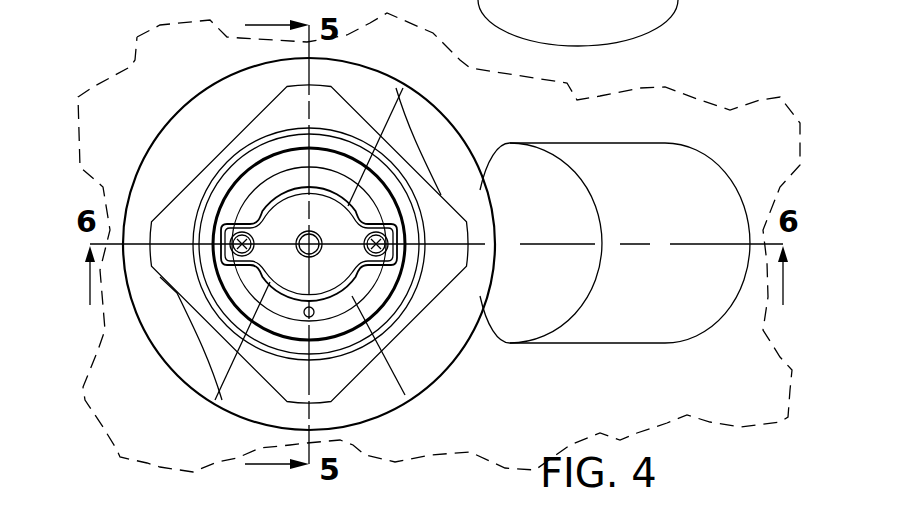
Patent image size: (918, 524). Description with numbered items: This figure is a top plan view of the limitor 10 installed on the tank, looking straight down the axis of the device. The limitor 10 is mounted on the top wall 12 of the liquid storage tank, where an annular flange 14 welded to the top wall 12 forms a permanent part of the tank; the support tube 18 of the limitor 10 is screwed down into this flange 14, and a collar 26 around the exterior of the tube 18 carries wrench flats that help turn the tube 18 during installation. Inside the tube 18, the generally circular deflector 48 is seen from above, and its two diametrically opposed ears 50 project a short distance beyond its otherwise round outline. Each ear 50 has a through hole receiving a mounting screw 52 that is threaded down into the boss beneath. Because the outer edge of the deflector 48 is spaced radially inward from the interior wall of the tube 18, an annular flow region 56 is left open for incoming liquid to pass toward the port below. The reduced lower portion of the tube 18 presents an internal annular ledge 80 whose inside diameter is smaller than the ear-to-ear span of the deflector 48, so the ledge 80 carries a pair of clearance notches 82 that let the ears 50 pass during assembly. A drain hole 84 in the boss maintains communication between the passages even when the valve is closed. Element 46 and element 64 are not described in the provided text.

The limitor 10 is at (158, 193).
The top wall 12 is at (753, 147).
The annular flange 14 is at (255, 398).
The support tube 18 is at (420, 345).
The collar 26 is at (327, 118).
The lobe 46 is at (215, 403).
The deflector 48 is at (400, 383).
The ears 50 is at (232, 200).
The mounting screws 52 is at (205, 325).
The annular flow region 56 is at (267, 192).
The plug 64 is at (647, 148).
The internal annular ledge 80 is at (363, 175).
The clearance notches 82 is at (226, 255).
The drain hole 84 is at (350, 370).